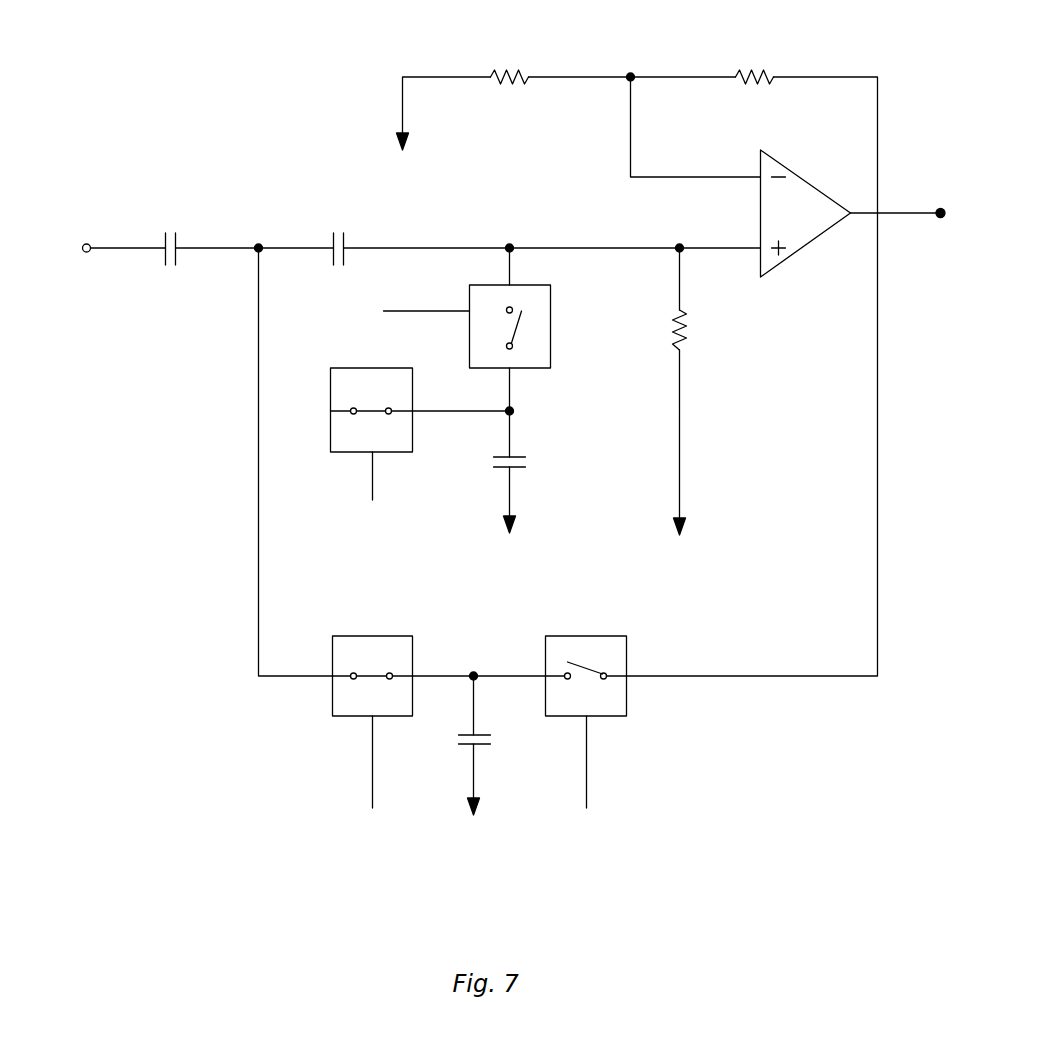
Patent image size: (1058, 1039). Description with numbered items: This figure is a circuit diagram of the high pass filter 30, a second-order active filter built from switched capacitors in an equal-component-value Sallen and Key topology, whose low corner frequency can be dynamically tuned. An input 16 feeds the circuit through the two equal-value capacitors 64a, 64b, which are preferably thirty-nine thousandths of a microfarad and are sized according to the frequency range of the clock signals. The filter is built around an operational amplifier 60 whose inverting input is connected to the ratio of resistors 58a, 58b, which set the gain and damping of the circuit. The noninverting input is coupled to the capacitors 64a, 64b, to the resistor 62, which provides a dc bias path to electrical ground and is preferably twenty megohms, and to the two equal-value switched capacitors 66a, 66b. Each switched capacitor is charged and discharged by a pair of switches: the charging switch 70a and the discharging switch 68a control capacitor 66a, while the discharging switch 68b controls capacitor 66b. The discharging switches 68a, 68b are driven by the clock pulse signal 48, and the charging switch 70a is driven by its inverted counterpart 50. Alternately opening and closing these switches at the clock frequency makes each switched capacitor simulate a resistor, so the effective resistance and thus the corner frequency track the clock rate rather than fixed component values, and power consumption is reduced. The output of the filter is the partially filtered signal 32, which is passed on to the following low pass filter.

The high pass filter 30 is at (207, 775).
The input terminal 16 is at (87, 242).
The partially filtered signal 32 is at (900, 213).
The clock pulse signal 48 is at (403, 311).
The inverted clock pulse signal 50 is at (372, 475).
The resistor 58a is at (512, 63).
The resistor 58b is at (760, 63).
The operational amplifier 60 is at (797, 252).
The resistor 62 is at (688, 338).
The capacitor 64a is at (168, 268).
The capacitor 64b is at (338, 268).
The switched capacitor 66a is at (490, 740).
The switched capacitor 66b is at (527, 462).
The discharging switch 68a is at (595, 636).
The discharging switch 68b is at (552, 350).
The charging switch 70a is at (380, 368).